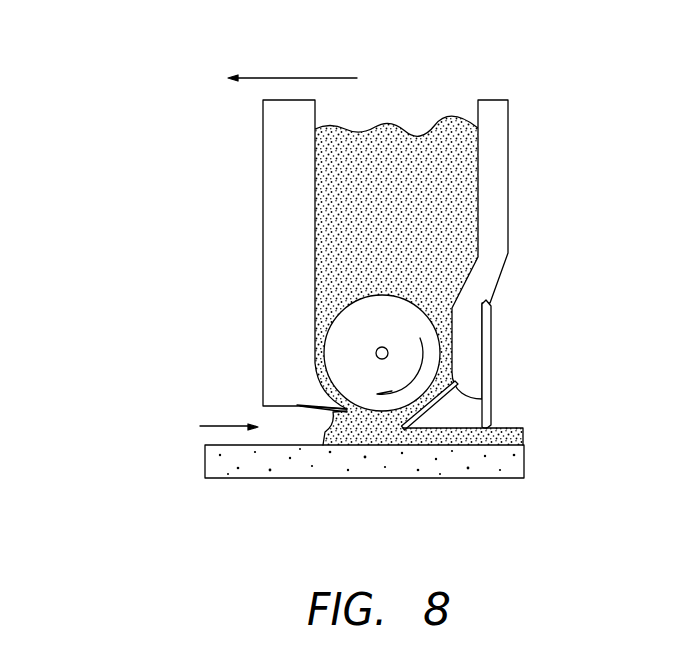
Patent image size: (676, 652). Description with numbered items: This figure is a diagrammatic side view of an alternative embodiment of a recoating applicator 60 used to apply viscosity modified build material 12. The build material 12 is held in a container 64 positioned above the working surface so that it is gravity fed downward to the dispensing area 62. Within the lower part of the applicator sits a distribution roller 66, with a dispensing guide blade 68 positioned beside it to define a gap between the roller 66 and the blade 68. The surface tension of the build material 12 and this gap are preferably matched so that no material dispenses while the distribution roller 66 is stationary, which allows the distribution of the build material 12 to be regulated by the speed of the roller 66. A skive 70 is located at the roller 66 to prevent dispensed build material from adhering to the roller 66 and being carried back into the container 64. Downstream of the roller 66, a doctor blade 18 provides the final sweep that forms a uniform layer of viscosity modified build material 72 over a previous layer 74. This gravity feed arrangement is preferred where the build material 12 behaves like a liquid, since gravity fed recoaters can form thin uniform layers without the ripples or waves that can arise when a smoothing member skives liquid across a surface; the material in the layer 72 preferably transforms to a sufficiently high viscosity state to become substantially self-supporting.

The recoating applicator 60 is at (313, 291).
The viscosity modified build material 12 is at (450, 172).
The container 64 is at (270, 186).
The distribution roller 66 is at (338, 340).
The dispensing area 62 is at (200, 426).
The skive 70 is at (310, 410).
The dispensing guide blade 68 is at (435, 428).
The doctor blade 18 is at (485, 388).
The uniform layer of viscosity modified build material 72 is at (522, 437).
The previous layer 74 is at (525, 460).